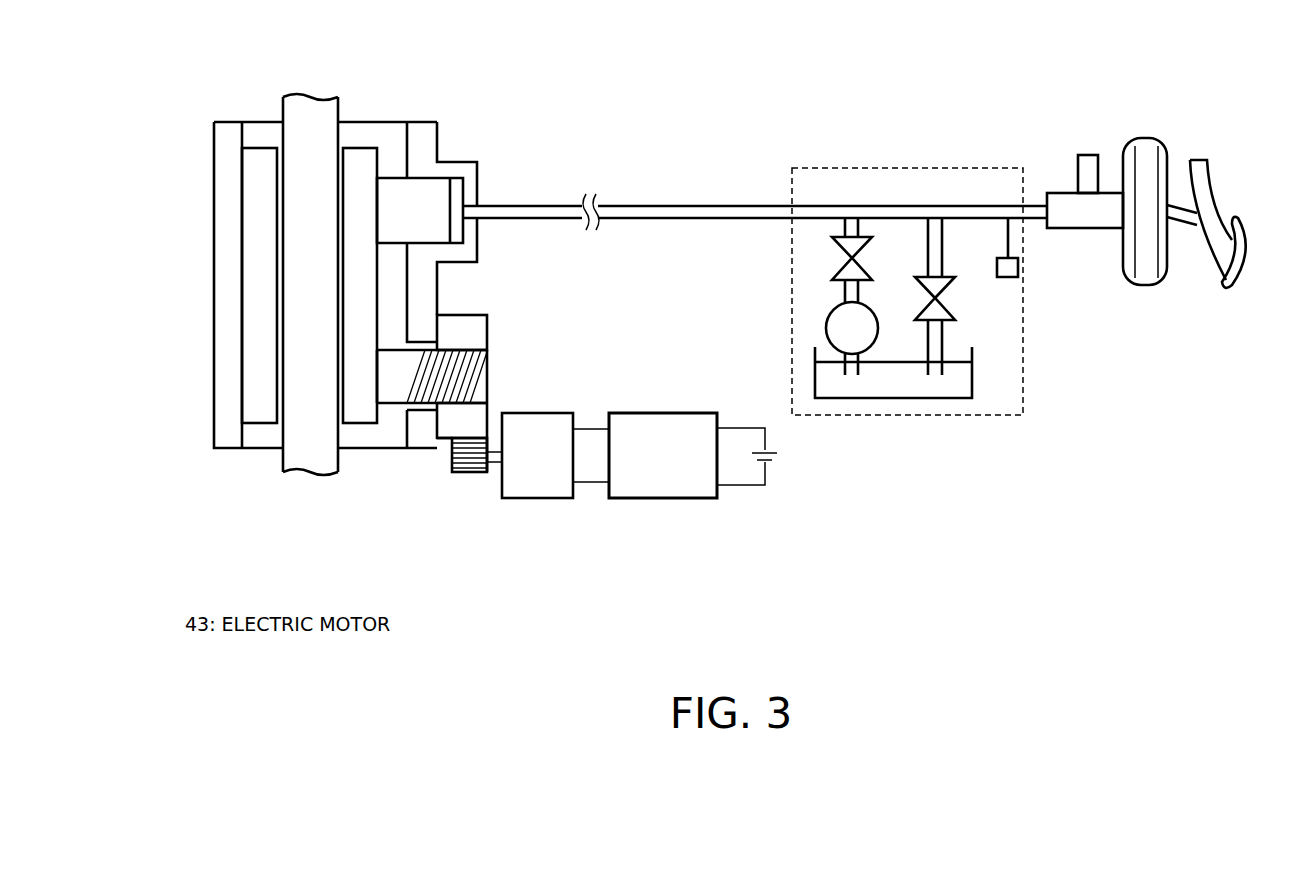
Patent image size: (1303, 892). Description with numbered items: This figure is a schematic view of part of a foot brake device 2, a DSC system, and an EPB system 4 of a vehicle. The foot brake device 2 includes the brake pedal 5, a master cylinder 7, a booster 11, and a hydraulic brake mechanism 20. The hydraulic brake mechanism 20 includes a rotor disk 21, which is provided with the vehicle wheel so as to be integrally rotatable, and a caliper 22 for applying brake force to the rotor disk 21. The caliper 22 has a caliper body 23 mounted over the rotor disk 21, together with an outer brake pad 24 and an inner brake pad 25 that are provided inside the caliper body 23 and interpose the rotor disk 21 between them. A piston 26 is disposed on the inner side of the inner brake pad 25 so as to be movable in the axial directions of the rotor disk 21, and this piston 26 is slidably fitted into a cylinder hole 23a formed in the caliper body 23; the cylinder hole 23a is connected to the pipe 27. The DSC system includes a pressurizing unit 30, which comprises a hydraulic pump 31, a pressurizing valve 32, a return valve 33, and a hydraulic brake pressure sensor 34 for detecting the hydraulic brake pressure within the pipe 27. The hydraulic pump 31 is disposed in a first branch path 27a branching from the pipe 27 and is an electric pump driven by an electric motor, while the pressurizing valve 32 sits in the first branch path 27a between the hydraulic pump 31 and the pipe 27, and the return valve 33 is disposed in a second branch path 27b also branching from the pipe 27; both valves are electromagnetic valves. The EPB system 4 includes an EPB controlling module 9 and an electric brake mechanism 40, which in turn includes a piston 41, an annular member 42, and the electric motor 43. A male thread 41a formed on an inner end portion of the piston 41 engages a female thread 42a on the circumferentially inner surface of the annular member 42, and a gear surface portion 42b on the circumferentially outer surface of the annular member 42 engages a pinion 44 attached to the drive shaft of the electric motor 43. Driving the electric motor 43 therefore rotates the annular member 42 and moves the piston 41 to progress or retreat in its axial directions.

The foot brake device 2 is at (1173, 153).
The EPB system 4 is at (577, 445).
The brake pedal 5 is at (1248, 256).
The master cylinder 7 is at (1090, 230).
The EPB controlling module 9 is at (652, 500).
The booster 11 is at (1150, 138).
The hydraulic brake mechanism 20 is at (378, 262).
The rotor disk 21 is at (307, 107).
The caliper 22 is at (418, 121).
The caliper body 23 is at (445, 295).
The cylinder hole 23a is at (430, 187).
The outer brake pad 24 is at (255, 425).
The inner brake pad 25 is at (357, 425).
The piston 26 is at (477, 190).
The pipe 27 is at (665, 220).
The first branch path 27a is at (843, 292).
The second branch path 27b is at (942, 237).
The pressurizing unit 30 is at (909, 258).
The hydraulic pump 31 is at (830, 325).
The pressurizing valve 32 is at (832, 255).
The return valve 33 is at (955, 300).
The hydraulic brake pressure sensor 34 is at (1018, 272).
The electric brake mechanism 40 is at (515, 427).
The piston 41 is at (392, 397).
The male thread 41a is at (470, 410).
The annular member 42 is at (465, 315).
The female thread 42a is at (465, 360).
The gear surface portion 42b is at (442, 443).
The electric motor 43 is at (533, 500).
The pinion 44 is at (467, 472).